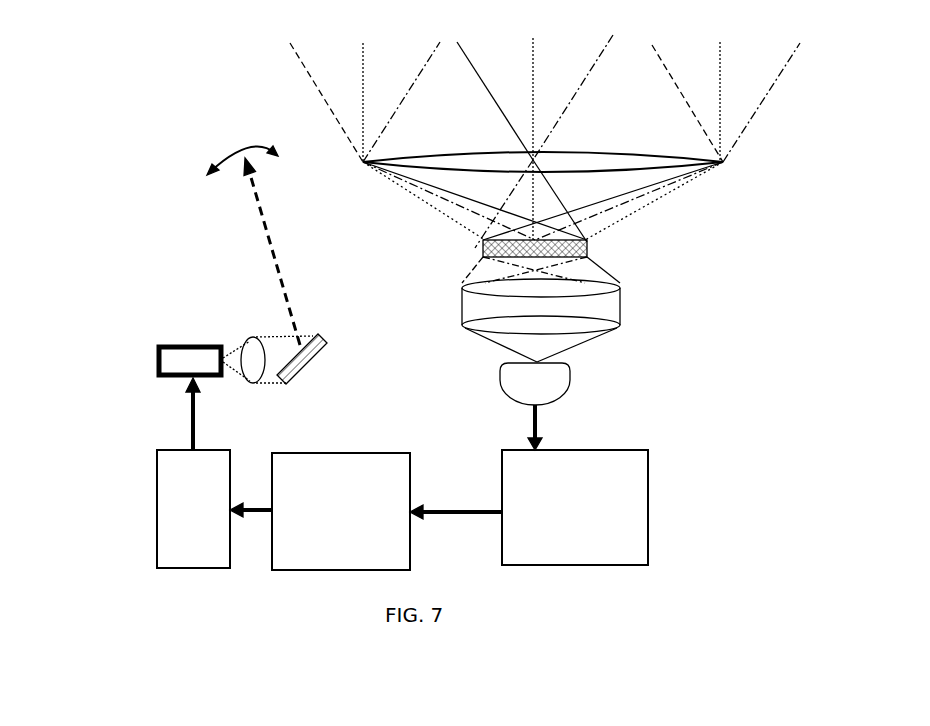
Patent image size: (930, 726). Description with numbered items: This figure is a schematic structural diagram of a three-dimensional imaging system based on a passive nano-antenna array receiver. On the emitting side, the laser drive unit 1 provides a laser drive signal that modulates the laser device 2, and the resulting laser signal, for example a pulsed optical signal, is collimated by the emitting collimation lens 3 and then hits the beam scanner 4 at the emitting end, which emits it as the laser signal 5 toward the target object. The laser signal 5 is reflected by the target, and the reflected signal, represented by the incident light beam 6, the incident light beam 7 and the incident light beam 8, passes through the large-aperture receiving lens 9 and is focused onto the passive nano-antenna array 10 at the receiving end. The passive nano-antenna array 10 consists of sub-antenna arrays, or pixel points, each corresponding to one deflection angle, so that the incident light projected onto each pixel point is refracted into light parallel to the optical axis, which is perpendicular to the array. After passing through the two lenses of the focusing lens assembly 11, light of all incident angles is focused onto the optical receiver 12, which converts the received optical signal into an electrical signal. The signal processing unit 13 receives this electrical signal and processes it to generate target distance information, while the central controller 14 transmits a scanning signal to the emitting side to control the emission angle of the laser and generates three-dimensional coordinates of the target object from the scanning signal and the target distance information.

The laser drive unit 1 is at (157, 508).
The laser device 2 is at (157, 358).
The emitting collimation lens 3 is at (250, 338).
The beam scanner 4 is at (288, 385).
The laser signal 5 is at (268, 247).
The incident light beam 6 is at (304, 66).
The incident light beam 7 is at (532, 57).
The incident light beam 8 is at (777, 87).
The receiving lens 9 is at (723, 162).
The passive nano-antenna array 10 is at (587, 248).
The focusing lens assembly 11 is at (620, 293).
The optical receiver 12 is at (570, 390).
The signal processing unit 13 is at (648, 518).
The central controller 14 is at (337, 451).